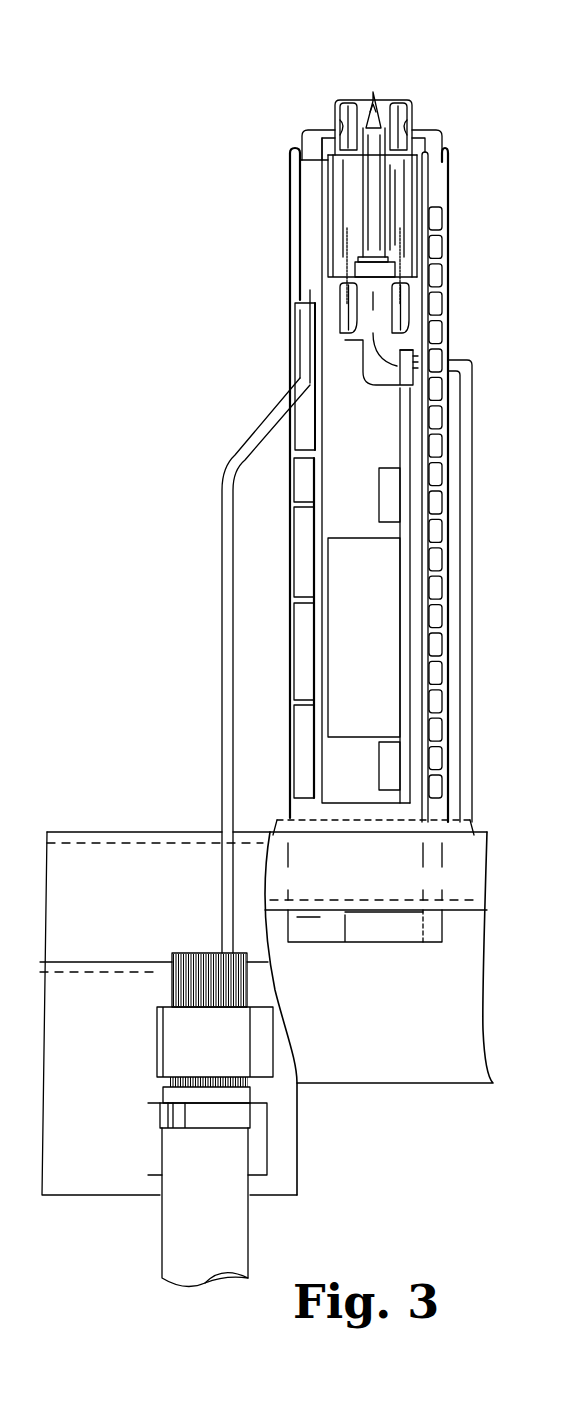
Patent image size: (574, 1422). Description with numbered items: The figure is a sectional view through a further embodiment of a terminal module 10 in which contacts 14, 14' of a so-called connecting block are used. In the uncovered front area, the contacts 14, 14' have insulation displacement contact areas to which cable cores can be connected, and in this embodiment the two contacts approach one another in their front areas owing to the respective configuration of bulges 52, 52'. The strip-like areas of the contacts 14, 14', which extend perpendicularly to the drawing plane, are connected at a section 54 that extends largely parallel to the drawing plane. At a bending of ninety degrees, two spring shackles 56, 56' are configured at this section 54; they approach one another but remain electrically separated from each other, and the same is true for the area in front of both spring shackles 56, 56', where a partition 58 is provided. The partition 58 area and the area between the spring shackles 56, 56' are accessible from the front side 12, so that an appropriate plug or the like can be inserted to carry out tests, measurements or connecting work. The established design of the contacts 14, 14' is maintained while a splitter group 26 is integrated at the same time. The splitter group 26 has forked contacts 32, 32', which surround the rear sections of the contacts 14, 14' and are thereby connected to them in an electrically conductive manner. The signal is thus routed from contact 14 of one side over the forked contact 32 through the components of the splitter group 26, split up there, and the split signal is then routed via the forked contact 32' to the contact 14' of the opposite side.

The terminal module 10 is at (163, 275).
The front side 12 is at (383, 90).
The contact 14 is at (328, 203).
The contact 14' is at (456, 203).
The splitter group 26 is at (388, 652).
The forked contact 32 is at (329, 334).
The forked contact 32' is at (447, 316).
The bulge 52 is at (322, 112).
The bulge 52' is at (423, 112).
The section 54 is at (393, 168).
The spring shackle 56 is at (298, 256).
The spring shackle 56' is at (438, 258).
The partition 58 is at (373, 155).